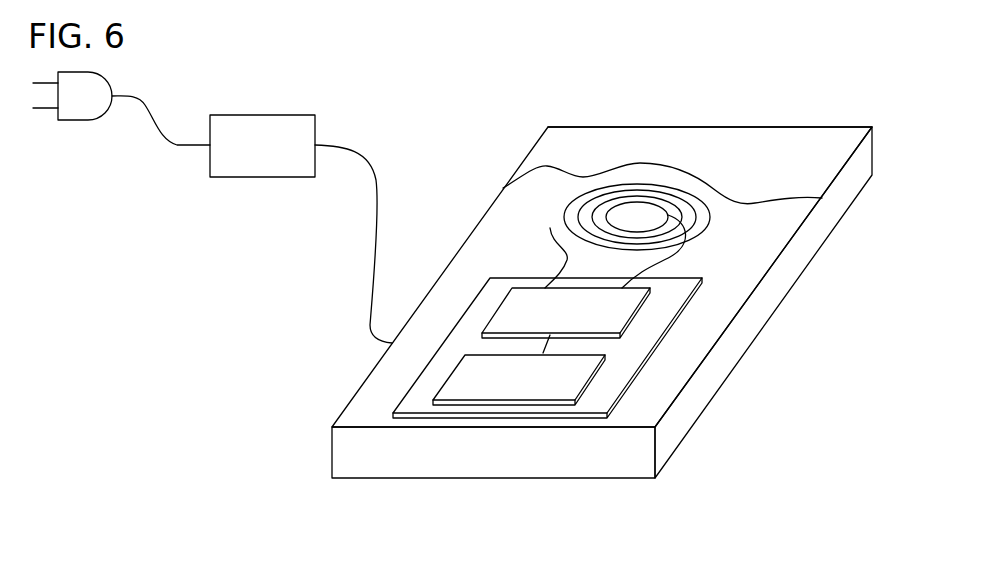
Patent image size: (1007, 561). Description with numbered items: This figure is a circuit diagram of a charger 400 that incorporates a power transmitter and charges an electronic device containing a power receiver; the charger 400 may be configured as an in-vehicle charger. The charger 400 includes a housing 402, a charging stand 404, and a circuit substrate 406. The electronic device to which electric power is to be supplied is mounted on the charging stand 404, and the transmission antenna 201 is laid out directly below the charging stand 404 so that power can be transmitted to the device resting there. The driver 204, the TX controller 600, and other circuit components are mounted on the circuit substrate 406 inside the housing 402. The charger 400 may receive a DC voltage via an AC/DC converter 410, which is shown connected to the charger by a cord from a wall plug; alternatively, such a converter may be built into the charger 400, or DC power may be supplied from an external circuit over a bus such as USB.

The charger 400 is at (513, 460).
The housing 402 is at (862, 163).
The charging stand 404 is at (584, 162).
The transmission antenna 201 is at (718, 218).
The circuit substrate 406 is at (677, 292).
The driver 204 is at (615, 322).
The TX controller 600 is at (577, 375).
The AC/DC converter 410 is at (260, 178).